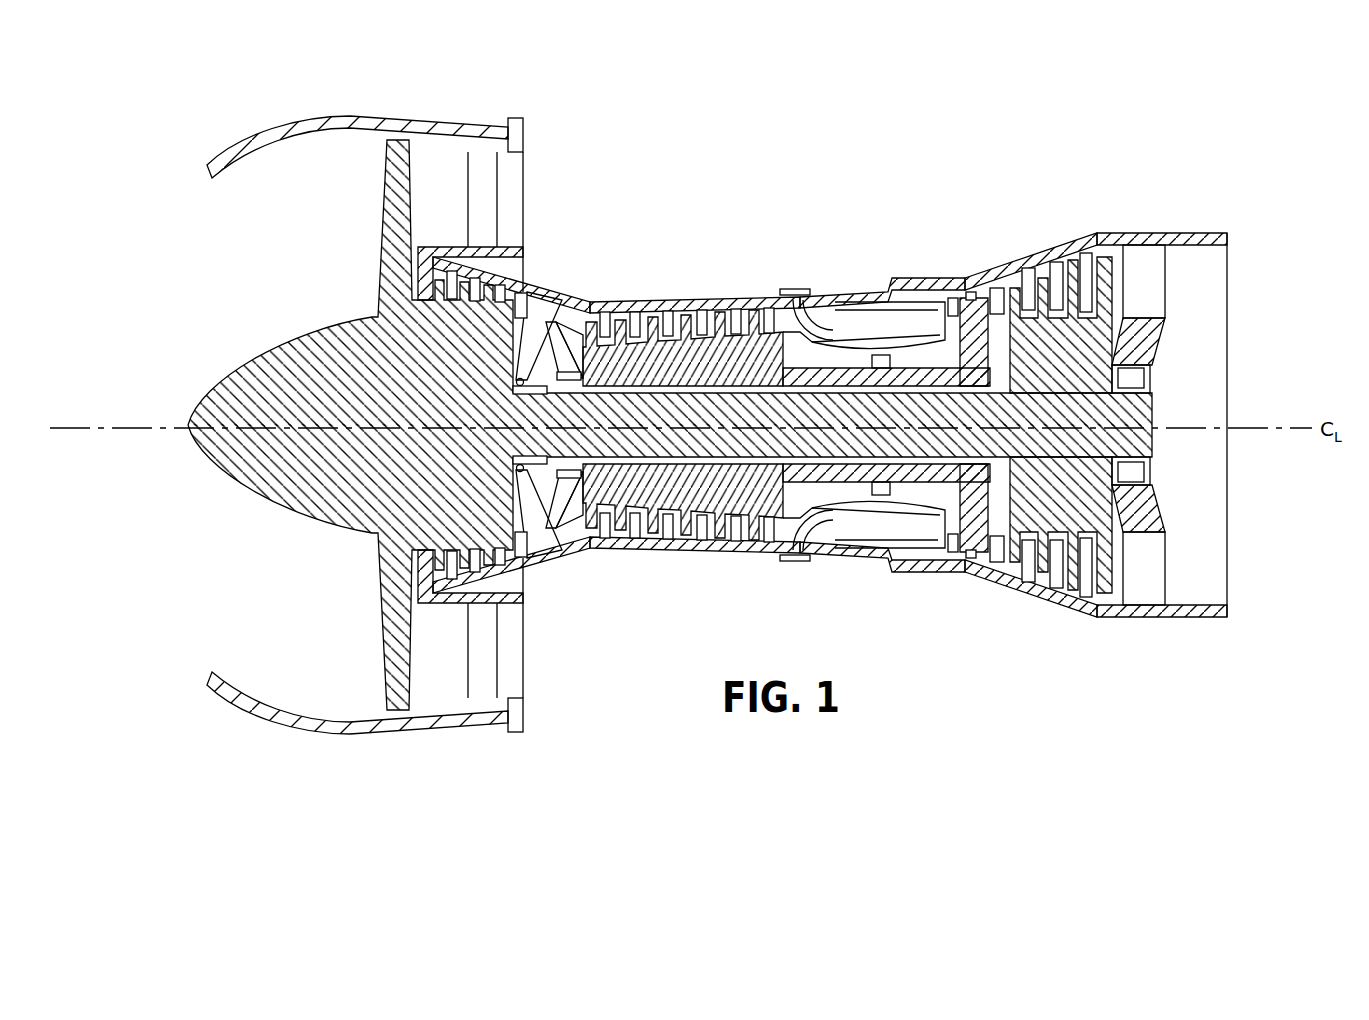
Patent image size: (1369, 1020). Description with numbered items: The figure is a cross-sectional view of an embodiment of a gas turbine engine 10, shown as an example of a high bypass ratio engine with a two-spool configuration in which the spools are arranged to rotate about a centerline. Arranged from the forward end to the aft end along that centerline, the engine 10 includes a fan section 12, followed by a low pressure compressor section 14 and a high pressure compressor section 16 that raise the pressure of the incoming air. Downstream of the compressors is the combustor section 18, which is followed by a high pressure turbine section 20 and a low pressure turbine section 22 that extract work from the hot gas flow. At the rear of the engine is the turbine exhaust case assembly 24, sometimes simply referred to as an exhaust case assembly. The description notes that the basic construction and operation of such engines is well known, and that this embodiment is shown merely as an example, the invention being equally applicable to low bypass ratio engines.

The gas turbine engine 10 is at (226, 138).
The fan section 12 is at (378, 200).
The low pressure compressor section 14 is at (512, 291).
The high pressure compressor section 16 is at (622, 308).
The combustor section 18 is at (876, 316).
The high pressure turbine section 20 is at (982, 296).
The low pressure turbine section 22 is at (1071, 272).
The turbine exhaust case assembly 24 is at (1141, 258).